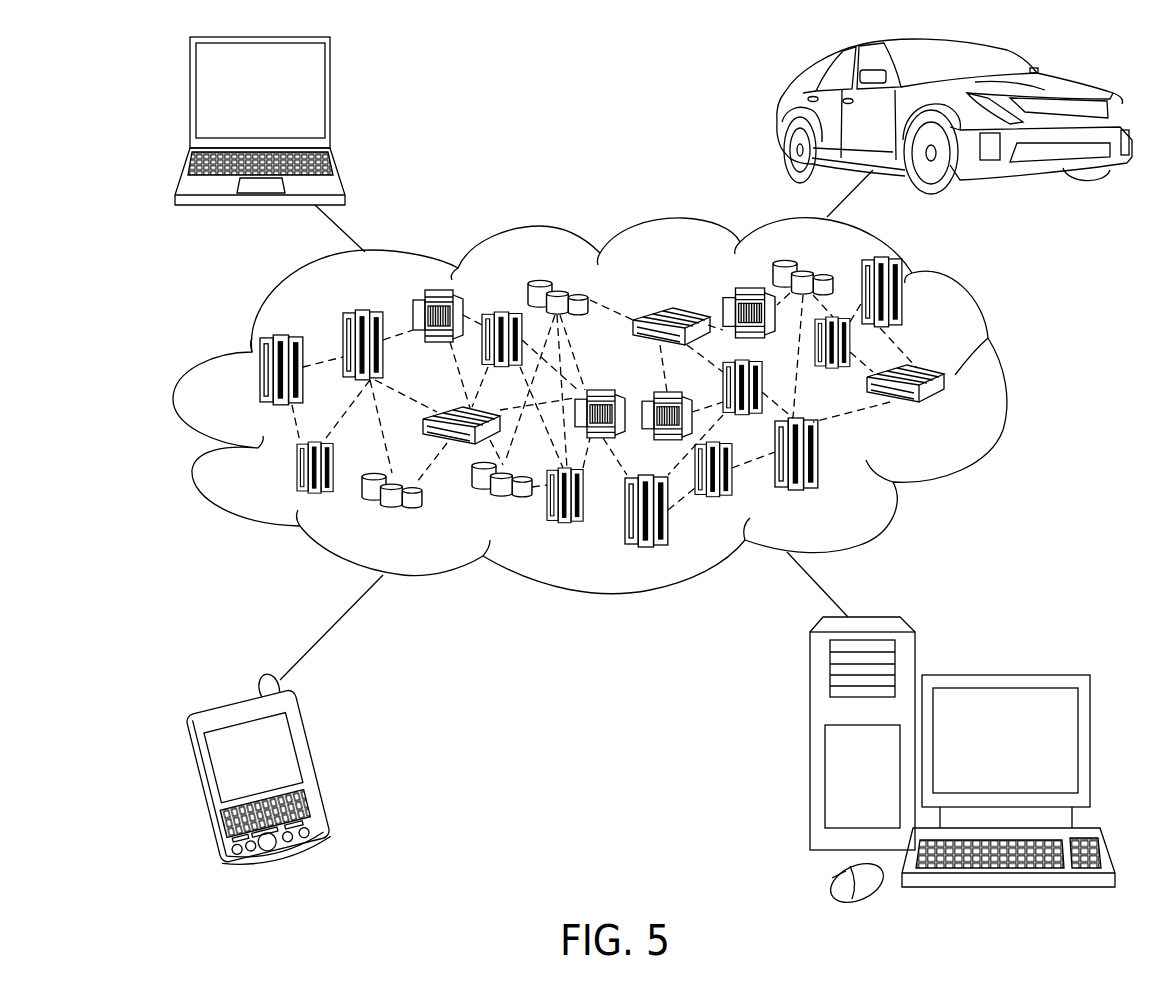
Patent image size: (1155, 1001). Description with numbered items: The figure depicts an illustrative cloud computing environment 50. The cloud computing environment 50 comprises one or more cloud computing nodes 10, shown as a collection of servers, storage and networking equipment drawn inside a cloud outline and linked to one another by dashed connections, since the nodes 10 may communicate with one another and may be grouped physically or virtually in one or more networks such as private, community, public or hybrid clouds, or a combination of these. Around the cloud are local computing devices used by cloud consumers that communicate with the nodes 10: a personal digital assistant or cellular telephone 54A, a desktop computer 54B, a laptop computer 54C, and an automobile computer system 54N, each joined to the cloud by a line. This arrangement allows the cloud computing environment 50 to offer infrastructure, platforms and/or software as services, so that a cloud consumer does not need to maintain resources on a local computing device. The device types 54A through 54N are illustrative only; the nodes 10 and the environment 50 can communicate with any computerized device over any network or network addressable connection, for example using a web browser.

The cloud computing node 10 is at (944, 411).
The cloud computing environment 50 is at (1003, 380).
The personal digital assistant or cellular telephone 54A is at (322, 773).
The desktop computer 54B is at (1003, 675).
The laptop computer 54C is at (330, 100).
The automobile computer system 54N is at (780, 118).